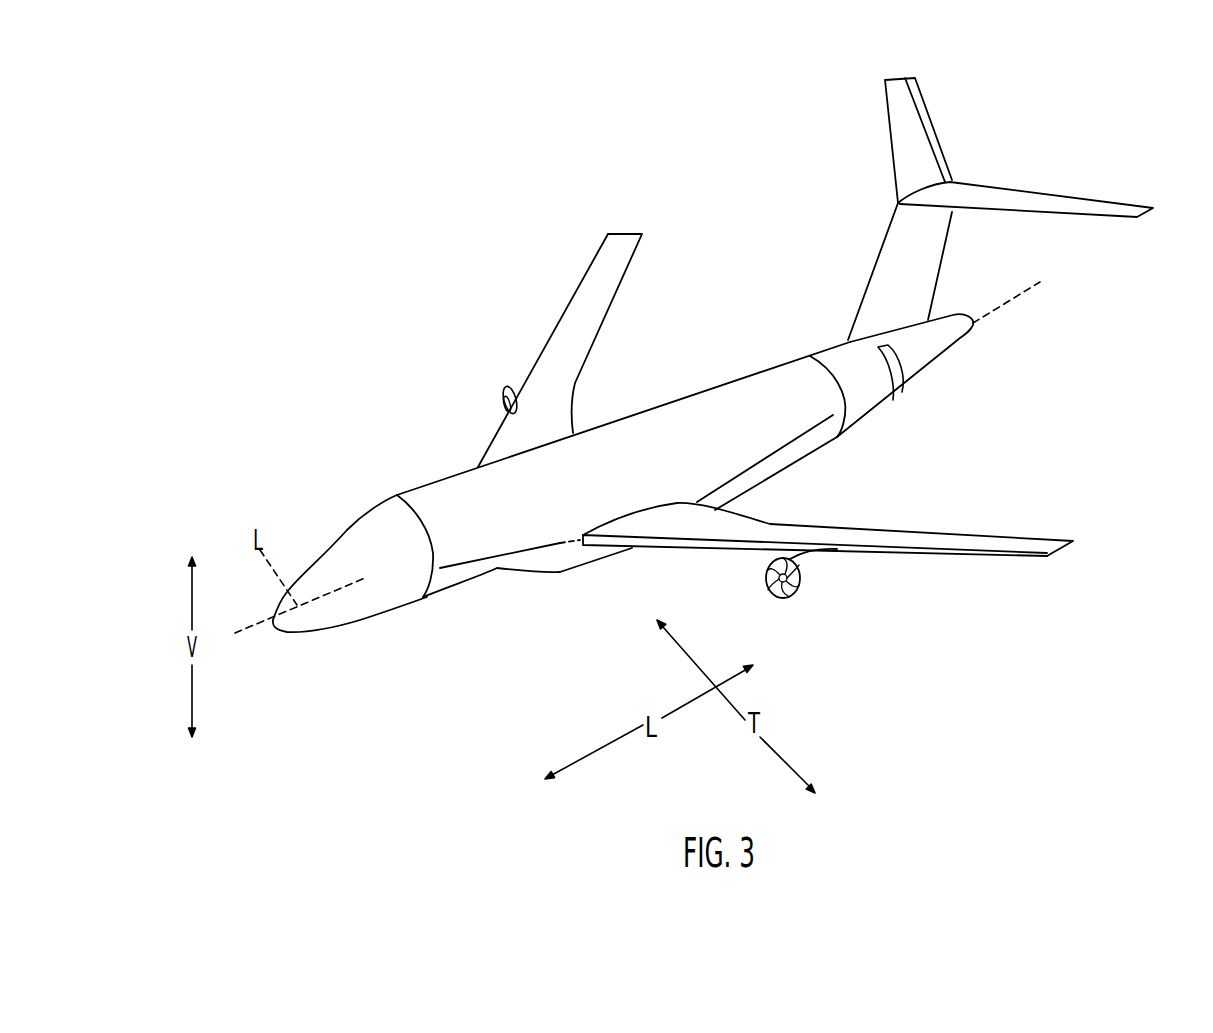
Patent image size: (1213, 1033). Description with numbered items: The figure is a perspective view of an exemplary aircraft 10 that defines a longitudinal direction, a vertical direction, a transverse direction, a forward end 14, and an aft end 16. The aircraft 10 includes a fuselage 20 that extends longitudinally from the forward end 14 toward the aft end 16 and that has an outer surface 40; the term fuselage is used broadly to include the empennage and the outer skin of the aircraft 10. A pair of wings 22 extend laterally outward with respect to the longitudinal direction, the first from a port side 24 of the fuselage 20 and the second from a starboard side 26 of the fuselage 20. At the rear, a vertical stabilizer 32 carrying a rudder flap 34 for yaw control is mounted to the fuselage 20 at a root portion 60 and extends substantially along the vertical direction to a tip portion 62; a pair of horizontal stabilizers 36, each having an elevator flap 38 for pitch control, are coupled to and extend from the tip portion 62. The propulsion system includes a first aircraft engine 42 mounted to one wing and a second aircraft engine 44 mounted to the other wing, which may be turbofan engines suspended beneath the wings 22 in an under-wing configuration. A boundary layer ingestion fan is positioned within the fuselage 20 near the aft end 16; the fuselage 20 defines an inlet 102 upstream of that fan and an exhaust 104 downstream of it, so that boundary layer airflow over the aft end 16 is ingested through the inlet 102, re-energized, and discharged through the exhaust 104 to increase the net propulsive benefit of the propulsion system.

The aircraft 10 is at (588, 134).
The forward end 14 is at (284, 662).
The aft end 16 is at (1062, 343).
The fuselage 20 is at (660, 416).
The wings 22 is at (568, 337).
The port side 24 is at (532, 628).
The starboard side 26 is at (433, 378).
The vertical stabilizer 32 is at (890, 253).
The rudder flap 34 is at (947, 252).
The horizontal stabilizers 36 is at (901, 132).
The elevator flap 38 is at (930, 120).
The outer surface 40 is at (481, 494).
The first aircraft engine 42 is at (808, 573).
The second aircraft engine 44 is at (517, 382).
The root portion 60 is at (900, 328).
The tip portion 62 is at (905, 212).
The inlet 102 is at (895, 393).
The exhaust 104 is at (980, 330).